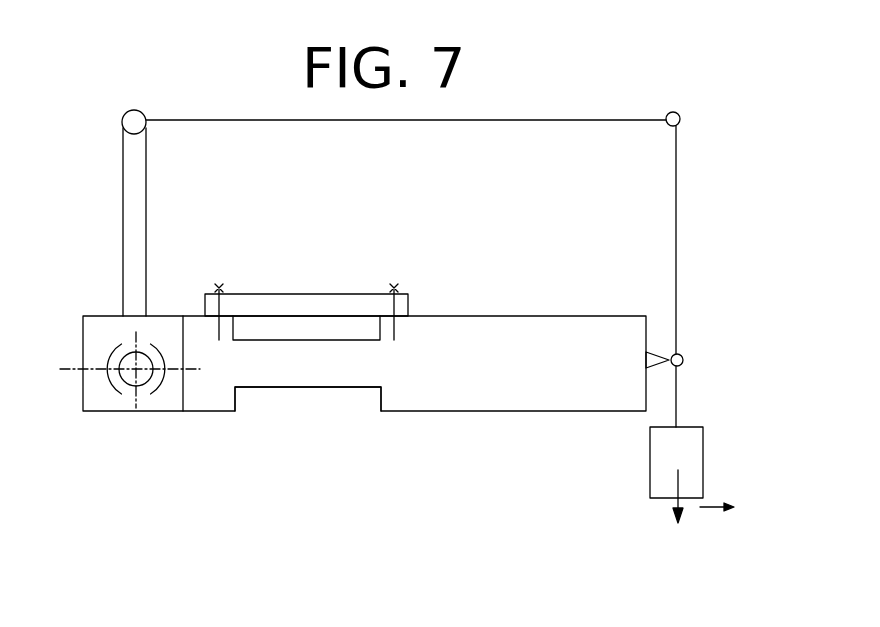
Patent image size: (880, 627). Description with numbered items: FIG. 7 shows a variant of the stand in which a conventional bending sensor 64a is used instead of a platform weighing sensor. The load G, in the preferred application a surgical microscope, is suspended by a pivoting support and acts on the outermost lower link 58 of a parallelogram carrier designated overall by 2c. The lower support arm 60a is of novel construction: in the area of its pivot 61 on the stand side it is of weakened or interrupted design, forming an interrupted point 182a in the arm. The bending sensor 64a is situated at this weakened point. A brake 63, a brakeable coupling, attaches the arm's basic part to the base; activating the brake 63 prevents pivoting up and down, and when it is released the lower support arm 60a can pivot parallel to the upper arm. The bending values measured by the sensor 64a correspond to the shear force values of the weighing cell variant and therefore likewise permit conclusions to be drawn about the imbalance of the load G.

The stage frame 2c is at (498, 186).
The outermost lower link 58 is at (684, 358).
The lower support arm 60a is at (577, 411).
The pivot 61 is at (132, 378).
The brake 63 is at (164, 390).
The bending sensor 64a is at (345, 302).
The interrupted point in the support arm 182a is at (308, 388).
The load G is at (692, 484).